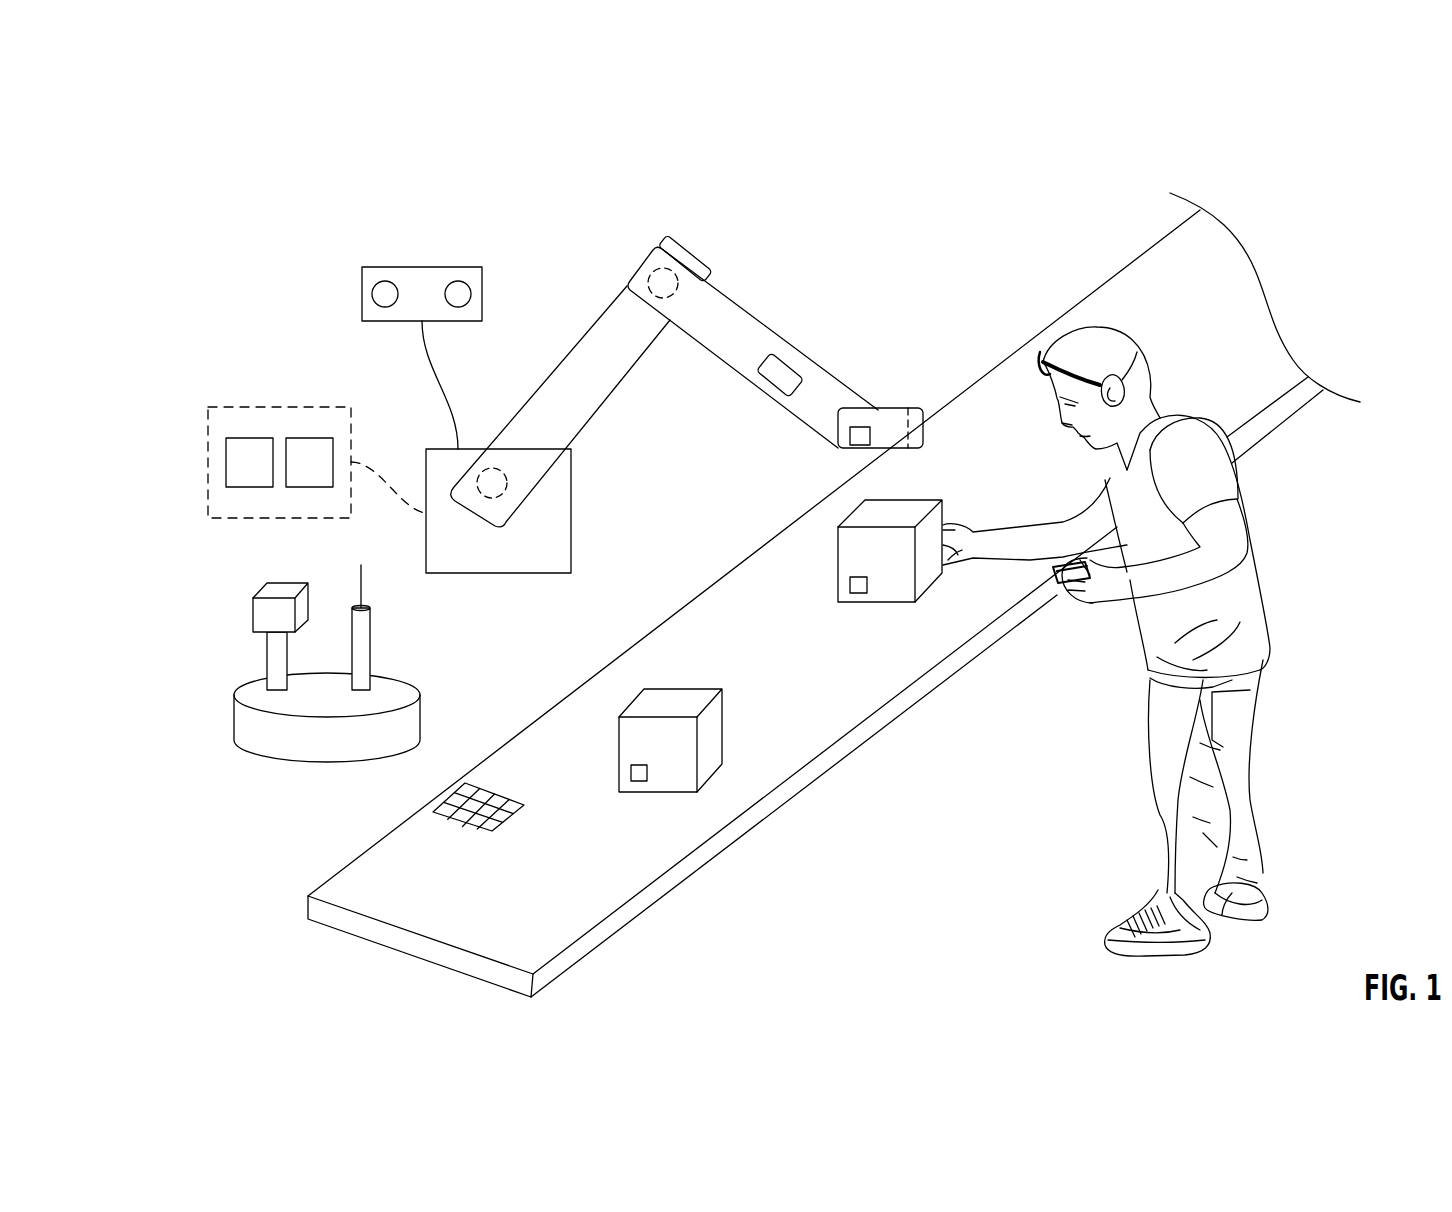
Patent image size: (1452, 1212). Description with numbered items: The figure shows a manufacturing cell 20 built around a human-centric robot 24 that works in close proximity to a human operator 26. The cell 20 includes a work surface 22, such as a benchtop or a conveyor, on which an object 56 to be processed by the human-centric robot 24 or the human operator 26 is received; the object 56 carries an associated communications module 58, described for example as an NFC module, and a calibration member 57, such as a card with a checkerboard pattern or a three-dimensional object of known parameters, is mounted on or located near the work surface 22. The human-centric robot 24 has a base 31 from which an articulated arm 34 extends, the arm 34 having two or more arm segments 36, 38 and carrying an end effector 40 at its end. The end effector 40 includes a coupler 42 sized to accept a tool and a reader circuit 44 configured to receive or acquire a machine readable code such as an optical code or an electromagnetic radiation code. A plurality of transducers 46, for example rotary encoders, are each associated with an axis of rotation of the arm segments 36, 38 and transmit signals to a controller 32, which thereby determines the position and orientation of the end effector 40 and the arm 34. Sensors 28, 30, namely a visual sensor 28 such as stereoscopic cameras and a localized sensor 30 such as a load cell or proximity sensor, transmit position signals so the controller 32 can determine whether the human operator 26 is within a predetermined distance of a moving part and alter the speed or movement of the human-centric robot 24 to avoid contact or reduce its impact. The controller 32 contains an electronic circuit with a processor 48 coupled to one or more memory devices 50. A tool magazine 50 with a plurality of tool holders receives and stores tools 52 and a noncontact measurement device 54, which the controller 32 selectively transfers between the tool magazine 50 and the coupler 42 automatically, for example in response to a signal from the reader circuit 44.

The manufacturing cell 20 is at (864, 155).
The work surface 22 is at (407, 945).
The human-centric robot 24 is at (472, 188).
The human operator 26 is at (1247, 813).
The visual sensor 28 is at (422, 267).
The localized sensor 30 is at (790, 363).
The base 31 is at (498, 578).
The controller 32 is at (275, 430).
The articulated arm 34 is at (738, 233).
The arm segment 36 is at (605, 397).
The arm segment 38 is at (773, 407).
The end effector 40 is at (888, 407).
The coupler 42 is at (933, 442).
The reader circuit 44 is at (862, 448).
The transducer 46 is at (657, 265).
The processor 48 is at (248, 438).
The memory device / tool magazine 50 is at (307, 438).
The tool 52 is at (373, 653).
The noncontact measurement device 54 is at (253, 615).
The object 56 is at (877, 603).
The calibration member 57 is at (468, 824).
The communications module 58 is at (850, 585).